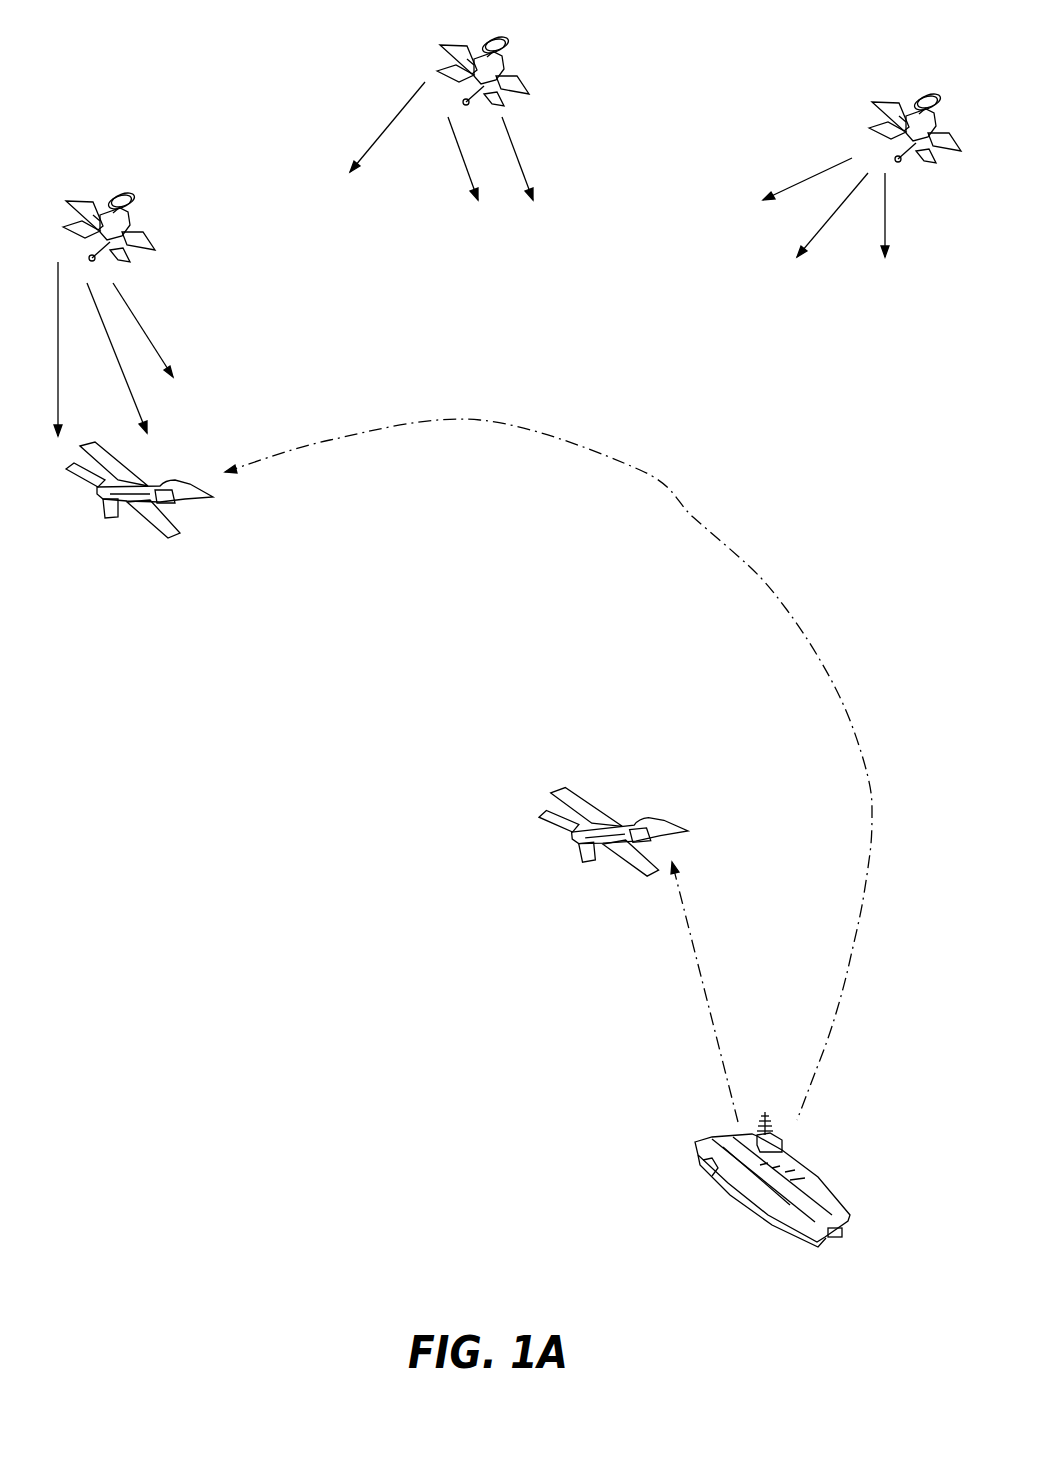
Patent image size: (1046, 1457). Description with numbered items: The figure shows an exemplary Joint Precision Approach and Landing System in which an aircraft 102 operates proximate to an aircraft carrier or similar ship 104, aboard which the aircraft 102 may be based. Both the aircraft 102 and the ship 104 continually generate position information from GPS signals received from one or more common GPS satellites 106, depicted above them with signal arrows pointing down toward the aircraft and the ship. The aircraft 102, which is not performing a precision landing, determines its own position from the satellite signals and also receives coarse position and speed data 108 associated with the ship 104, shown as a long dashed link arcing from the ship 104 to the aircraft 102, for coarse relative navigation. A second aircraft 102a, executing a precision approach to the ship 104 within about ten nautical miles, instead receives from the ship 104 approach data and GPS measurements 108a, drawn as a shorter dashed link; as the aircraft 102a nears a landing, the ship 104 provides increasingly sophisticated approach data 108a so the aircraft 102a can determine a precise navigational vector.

The aircraft 102 is at (120, 520).
The aircraft executing a precision approach operation 102a is at (548, 812).
The ship 104 is at (693, 1177).
The GPS satellites 106 is at (108, 188).
The coarse position and speed data 108 is at (703, 522).
The approach data and GPS measurements 108a is at (698, 972).